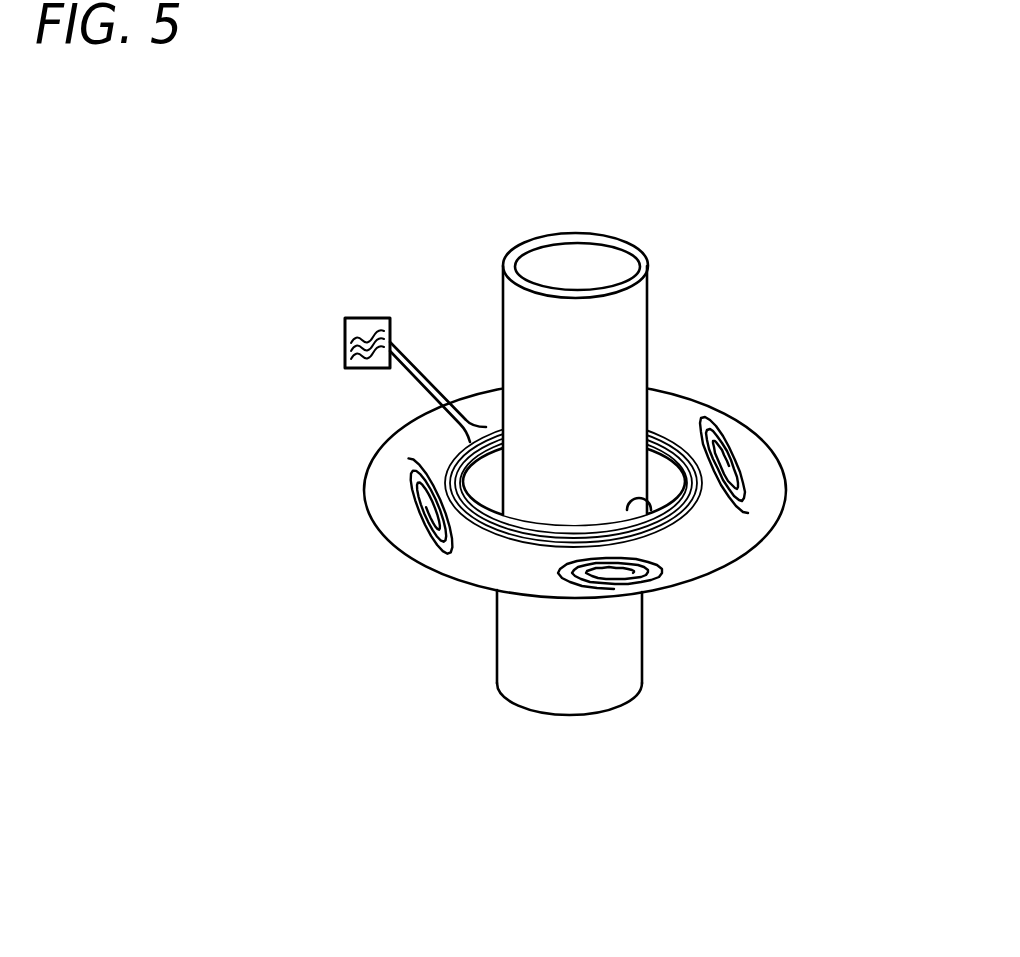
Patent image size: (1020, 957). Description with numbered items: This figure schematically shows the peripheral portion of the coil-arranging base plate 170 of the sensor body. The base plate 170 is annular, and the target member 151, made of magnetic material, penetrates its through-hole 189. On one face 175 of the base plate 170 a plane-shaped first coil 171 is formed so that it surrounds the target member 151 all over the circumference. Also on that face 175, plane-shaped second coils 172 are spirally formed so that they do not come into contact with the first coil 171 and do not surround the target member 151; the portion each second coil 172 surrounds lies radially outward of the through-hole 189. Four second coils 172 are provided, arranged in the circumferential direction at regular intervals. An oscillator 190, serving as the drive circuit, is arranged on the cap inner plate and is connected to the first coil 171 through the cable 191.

The target member 151 is at (587, 491).
The base plate 170 is at (563, 520).
The first coil 171 is at (495, 545).
The second coil 172 is at (403, 496).
The one face 175 is at (423, 443).
The through-hole 189 is at (672, 512).
The oscillator 190 is at (367, 318).
The cable 191 is at (428, 381).